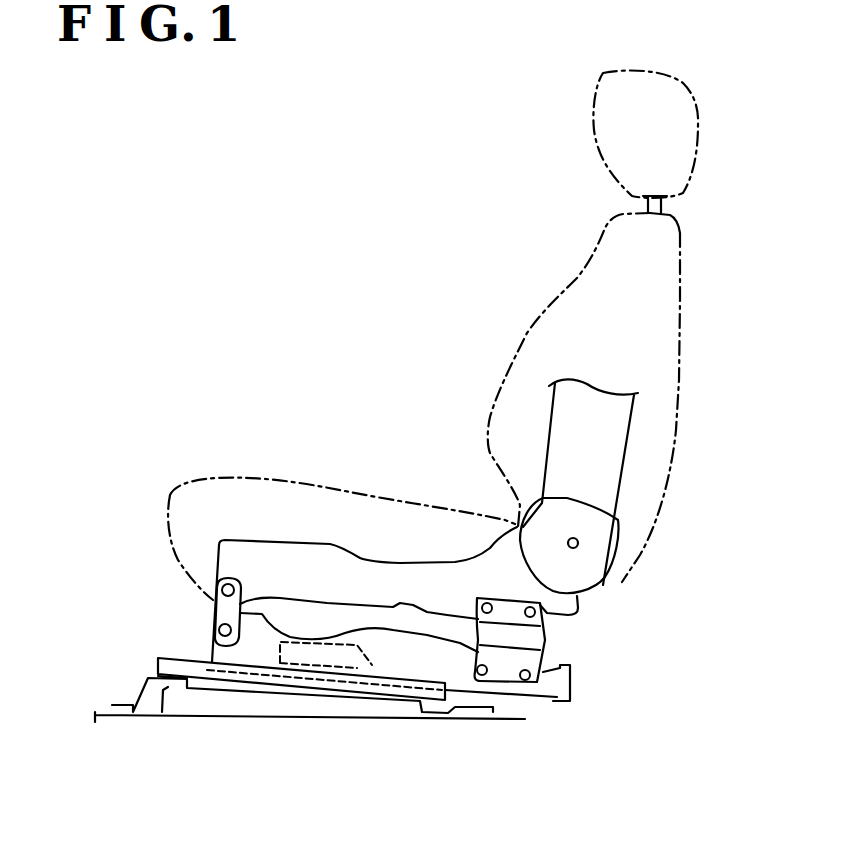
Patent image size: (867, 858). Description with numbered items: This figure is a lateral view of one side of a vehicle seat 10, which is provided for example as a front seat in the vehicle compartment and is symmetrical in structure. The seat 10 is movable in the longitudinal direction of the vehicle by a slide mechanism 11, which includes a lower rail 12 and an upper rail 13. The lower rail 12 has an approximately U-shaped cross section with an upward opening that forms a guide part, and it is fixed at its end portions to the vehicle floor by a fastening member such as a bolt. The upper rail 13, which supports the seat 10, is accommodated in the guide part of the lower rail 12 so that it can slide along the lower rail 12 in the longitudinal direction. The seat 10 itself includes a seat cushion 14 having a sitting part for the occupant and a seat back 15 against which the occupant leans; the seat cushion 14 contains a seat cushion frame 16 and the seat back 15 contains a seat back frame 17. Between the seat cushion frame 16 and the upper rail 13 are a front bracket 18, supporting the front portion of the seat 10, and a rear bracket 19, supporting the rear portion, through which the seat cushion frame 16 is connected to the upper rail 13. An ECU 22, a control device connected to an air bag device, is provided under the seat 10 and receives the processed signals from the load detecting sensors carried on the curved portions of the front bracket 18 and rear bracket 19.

The seat 10 is at (696, 247).
The slide mechanism 11 is at (146, 588).
The lower rail 12 is at (165, 657).
The upper rail 13 is at (553, 699).
The seat cushion 14 is at (228, 478).
The seat back 15 is at (683, 318).
The seat cushion frame 16 is at (403, 571).
The seat back frame 17 is at (617, 445).
The front bracket 18 is at (240, 582).
The rear bracket 19 is at (543, 660).
The ECU 22 is at (371, 660).